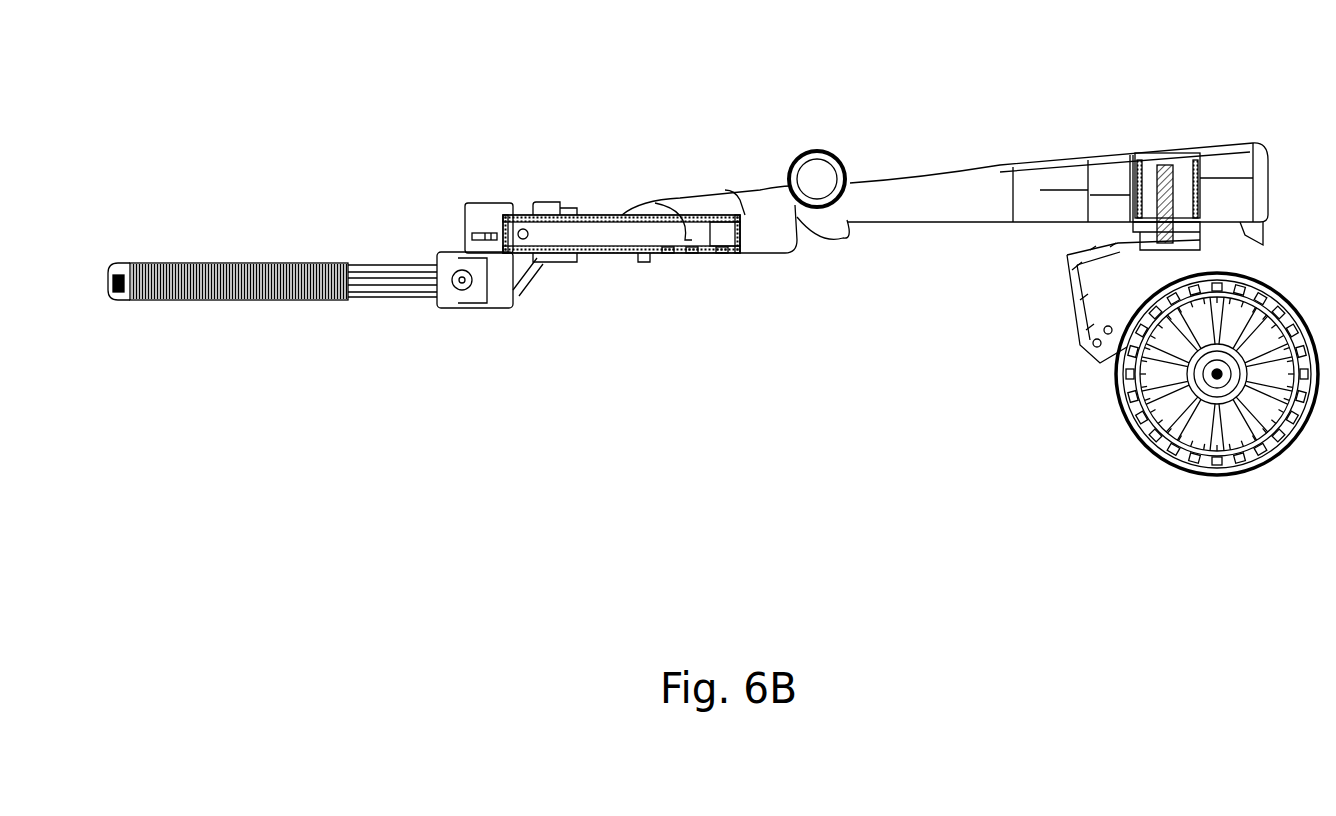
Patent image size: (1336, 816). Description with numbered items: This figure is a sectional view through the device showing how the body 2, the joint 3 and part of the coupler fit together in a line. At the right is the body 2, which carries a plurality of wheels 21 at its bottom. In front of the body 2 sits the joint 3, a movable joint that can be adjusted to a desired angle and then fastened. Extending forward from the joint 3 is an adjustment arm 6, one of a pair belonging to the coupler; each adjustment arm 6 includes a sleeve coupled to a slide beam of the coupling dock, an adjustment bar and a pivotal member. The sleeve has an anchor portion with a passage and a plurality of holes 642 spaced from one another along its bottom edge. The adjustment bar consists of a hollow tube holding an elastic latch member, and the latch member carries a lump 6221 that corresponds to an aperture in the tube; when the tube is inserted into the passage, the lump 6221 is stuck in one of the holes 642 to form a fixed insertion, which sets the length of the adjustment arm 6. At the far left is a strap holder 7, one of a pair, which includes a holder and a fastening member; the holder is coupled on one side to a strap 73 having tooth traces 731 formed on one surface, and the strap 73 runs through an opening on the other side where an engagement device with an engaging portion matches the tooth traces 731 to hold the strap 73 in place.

The body 2 is at (960, 183).
The wheels 21 is at (1124, 412).
The joint 3 is at (817, 182).
The adjustment arm 6 is at (617, 145).
The holes 642 is at (668, 255).
The lump 6221 is at (643, 255).
The strap holder 7 is at (323, 148).
The strap 73 is at (187, 262).
The tooth traces 731 is at (257, 262).